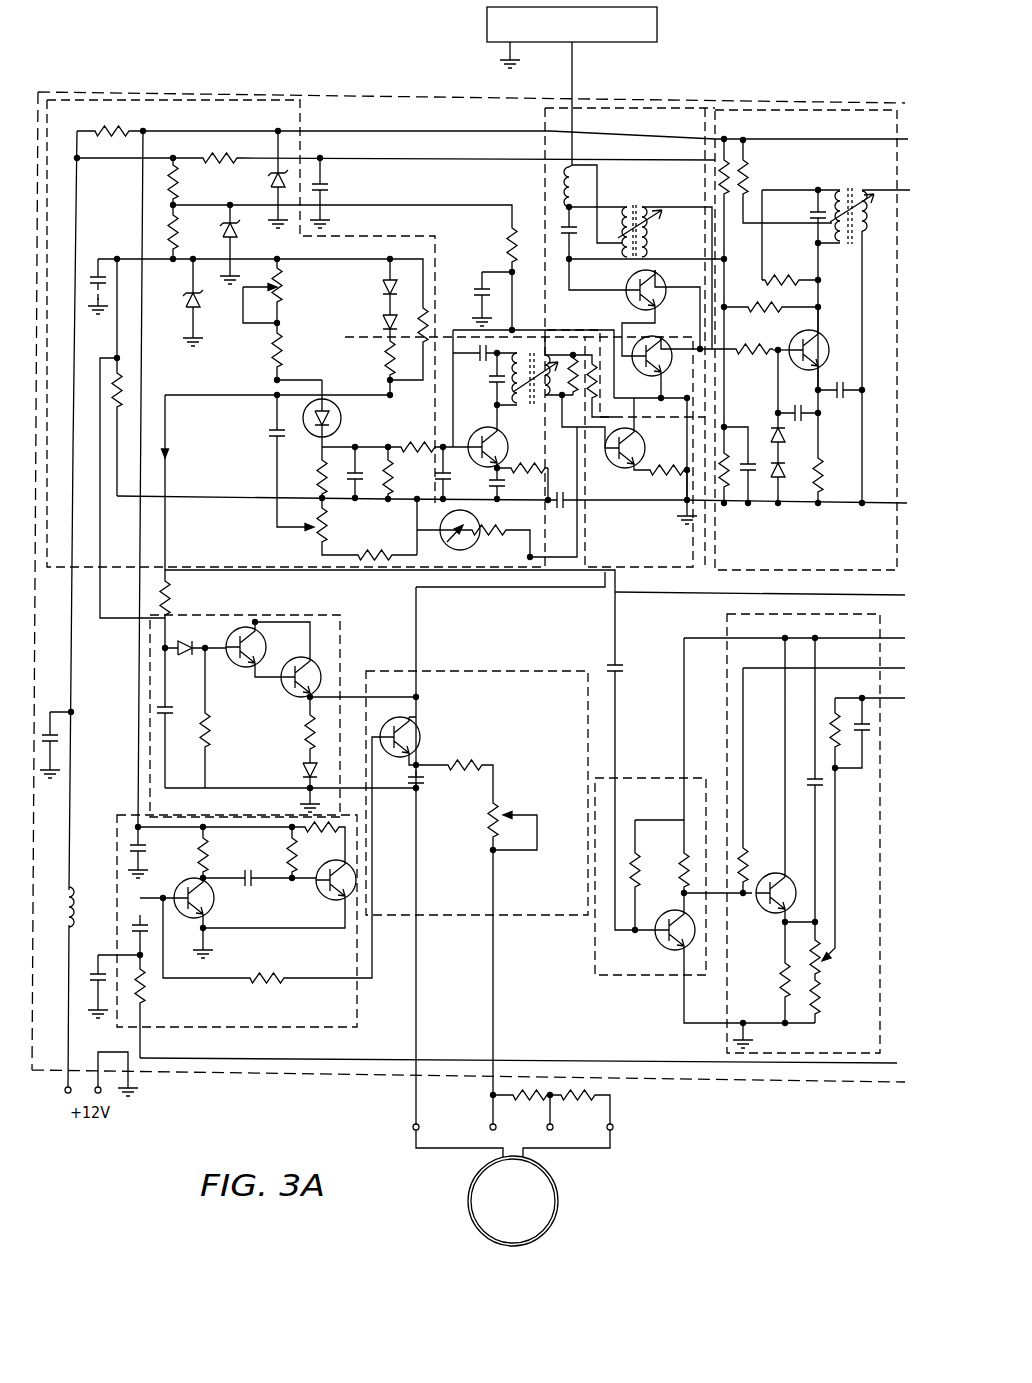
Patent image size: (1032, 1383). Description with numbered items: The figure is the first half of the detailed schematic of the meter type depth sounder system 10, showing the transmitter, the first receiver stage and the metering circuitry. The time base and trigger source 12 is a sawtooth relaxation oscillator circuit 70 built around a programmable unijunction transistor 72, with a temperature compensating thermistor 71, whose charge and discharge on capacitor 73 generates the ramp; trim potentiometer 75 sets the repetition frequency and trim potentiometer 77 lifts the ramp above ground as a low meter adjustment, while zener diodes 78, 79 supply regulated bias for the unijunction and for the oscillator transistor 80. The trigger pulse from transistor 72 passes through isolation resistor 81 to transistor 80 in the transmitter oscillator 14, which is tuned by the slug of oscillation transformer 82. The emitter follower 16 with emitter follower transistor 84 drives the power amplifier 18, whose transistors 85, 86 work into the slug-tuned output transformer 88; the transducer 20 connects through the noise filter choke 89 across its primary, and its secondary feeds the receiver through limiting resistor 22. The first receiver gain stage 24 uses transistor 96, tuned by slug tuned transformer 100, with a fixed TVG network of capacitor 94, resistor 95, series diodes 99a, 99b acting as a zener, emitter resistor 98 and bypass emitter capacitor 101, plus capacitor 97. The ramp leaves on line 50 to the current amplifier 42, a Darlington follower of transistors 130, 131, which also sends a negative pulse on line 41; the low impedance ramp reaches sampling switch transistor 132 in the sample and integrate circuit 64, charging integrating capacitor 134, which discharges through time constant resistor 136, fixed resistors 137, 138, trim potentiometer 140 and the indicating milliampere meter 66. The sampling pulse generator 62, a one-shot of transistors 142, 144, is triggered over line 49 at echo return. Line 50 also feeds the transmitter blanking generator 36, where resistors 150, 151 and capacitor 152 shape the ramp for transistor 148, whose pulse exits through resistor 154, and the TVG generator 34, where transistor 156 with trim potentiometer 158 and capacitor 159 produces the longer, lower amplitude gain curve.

The depth sounder system 10 is at (349, 69).
The time base and trigger source 12 is at (86, 98).
The transmitter oscillator 14 is at (438, 330).
The emitter follower 16 is at (655, 570).
The power amplifier 18 is at (641, 108).
The transducer 20 is at (686, 42).
The limiting resistor 22 is at (752, 350).
The first receiver gain stage 24 is at (771, 108).
The TVG generator 34 is at (727, 618).
The transmitter blanking generator 36 is at (665, 976).
The line 41 is at (745, 593).
The current amplifier 42 is at (293, 616).
The line 49 is at (667, 1061).
The line 50 is at (168, 440).
The sampling pulse generator 62 is at (125, 815).
The sample and integrate circuit 64 is at (496, 671).
The indicating milliampere meter 66 is at (539, 1188).
The sawtooth relaxation oscillator circuit 70 is at (265, 360).
The temperature compensating thermistor 71 is at (440, 536).
The programmable unijunction transistor 72 is at (342, 424).
The capacitor 73 is at (262, 437).
The trim potentiometer 75 is at (286, 279).
The trim potentiometer 77 is at (343, 524).
The zener diode 78 is at (201, 306).
The zener diode 79 is at (236, 231).
The oscillator transistor 80 is at (485, 433).
The isolation resistor 81 is at (418, 440).
The oscillation transformer 82 is at (538, 418).
The emitter follower transistor 84 is at (629, 470).
The amplifier transistor 85 is at (663, 284).
The amplifier transistor 86 is at (663, 343).
The output transformer 88 is at (648, 205).
The high frequency noise filter choke 89 is at (580, 194).
The capacitor 94 is at (753, 435).
The resistor 95 is at (728, 494).
The transistor 96 is at (821, 345).
The capacitor 97 is at (798, 402).
The emitter resistor 98 is at (823, 486).
The diode 99a is at (787, 436).
The diode 99b is at (787, 470).
The slug tuned transformer 100 is at (856, 188).
The emitter capacitor 101 is at (840, 388).
The transistor 130 is at (241, 672).
The transistor 131 is at (290, 702).
The transistor 132 is at (428, 741).
The integrating capacitor 134 is at (428, 782).
The time constant resistor 136 is at (471, 763).
The series fixed resistor 137 is at (523, 1105).
The series fixed resistor 138 is at (589, 1105).
The trim potentiometer 140 is at (501, 821).
The transistor 142 is at (216, 900).
The transistor 144 is at (308, 906).
The transistor 148 is at (651, 946).
The resistor 150 is at (641, 870).
The resistor 151 is at (676, 890).
The capacitor 152 is at (632, 667).
The resistor 154 is at (746, 850).
The transistor 156 is at (763, 912).
The trim potentiometer 158 is at (819, 966).
The capacitor 159 is at (802, 785).